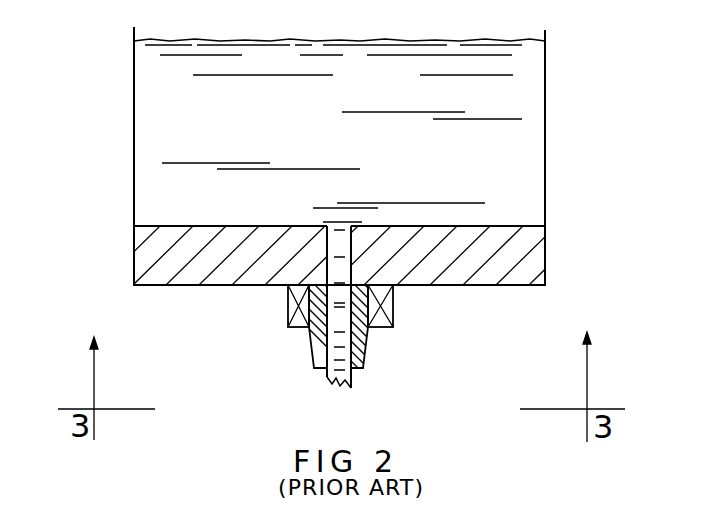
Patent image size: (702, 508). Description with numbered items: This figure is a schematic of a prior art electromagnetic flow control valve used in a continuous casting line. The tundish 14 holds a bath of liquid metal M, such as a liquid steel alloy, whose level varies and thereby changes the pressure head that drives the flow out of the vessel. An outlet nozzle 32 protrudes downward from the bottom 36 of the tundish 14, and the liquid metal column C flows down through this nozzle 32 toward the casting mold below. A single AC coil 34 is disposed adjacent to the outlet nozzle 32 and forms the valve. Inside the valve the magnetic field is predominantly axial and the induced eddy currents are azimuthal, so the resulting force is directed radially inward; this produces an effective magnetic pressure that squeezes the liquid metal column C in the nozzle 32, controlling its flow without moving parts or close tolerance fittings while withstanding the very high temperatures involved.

The tundish 14 is at (128, 258).
The bottom of the tundish 36 is at (186, 285).
The AC coil 34 is at (285, 312).
The outlet nozzle 32 is at (308, 360).
The liquid metal column C is at (345, 386).
The liquid metal M is at (410, 70).